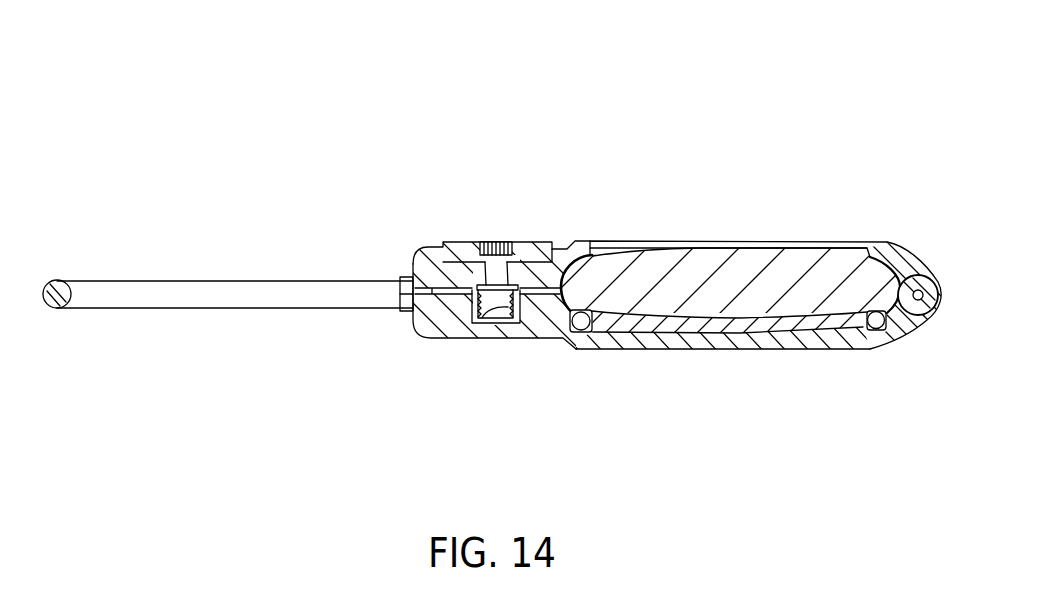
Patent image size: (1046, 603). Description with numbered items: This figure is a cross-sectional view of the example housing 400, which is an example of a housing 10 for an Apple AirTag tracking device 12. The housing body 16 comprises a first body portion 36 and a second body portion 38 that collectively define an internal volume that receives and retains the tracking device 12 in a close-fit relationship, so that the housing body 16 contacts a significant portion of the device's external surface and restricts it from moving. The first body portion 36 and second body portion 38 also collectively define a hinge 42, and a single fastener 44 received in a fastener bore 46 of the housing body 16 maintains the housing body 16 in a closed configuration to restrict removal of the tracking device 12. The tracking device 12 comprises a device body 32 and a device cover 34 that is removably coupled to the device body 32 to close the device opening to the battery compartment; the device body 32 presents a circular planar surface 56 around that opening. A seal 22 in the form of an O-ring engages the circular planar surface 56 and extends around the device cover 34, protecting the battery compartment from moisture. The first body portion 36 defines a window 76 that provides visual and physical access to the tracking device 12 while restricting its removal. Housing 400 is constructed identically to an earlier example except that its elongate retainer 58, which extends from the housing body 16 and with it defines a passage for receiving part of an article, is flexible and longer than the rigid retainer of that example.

The housing 10 is at (852, 43).
The housing 400 is at (845, 80).
The elongate retainer 58 is at (183, 272).
The fastener 44 is at (463, 245).
The window 76 is at (603, 241).
The first body portion 36 is at (670, 243).
The tracking device 12 is at (727, 236).
The device body 32 is at (800, 248).
The housing body 16 is at (853, 232).
The hinge 42 is at (942, 287).
The fastener bore 46 is at (506, 325).
The seal 22 is at (511, 318).
The second body portion 38 is at (657, 350).
The device cover 34 is at (768, 338).
The circular planar surface 56 is at (880, 341).